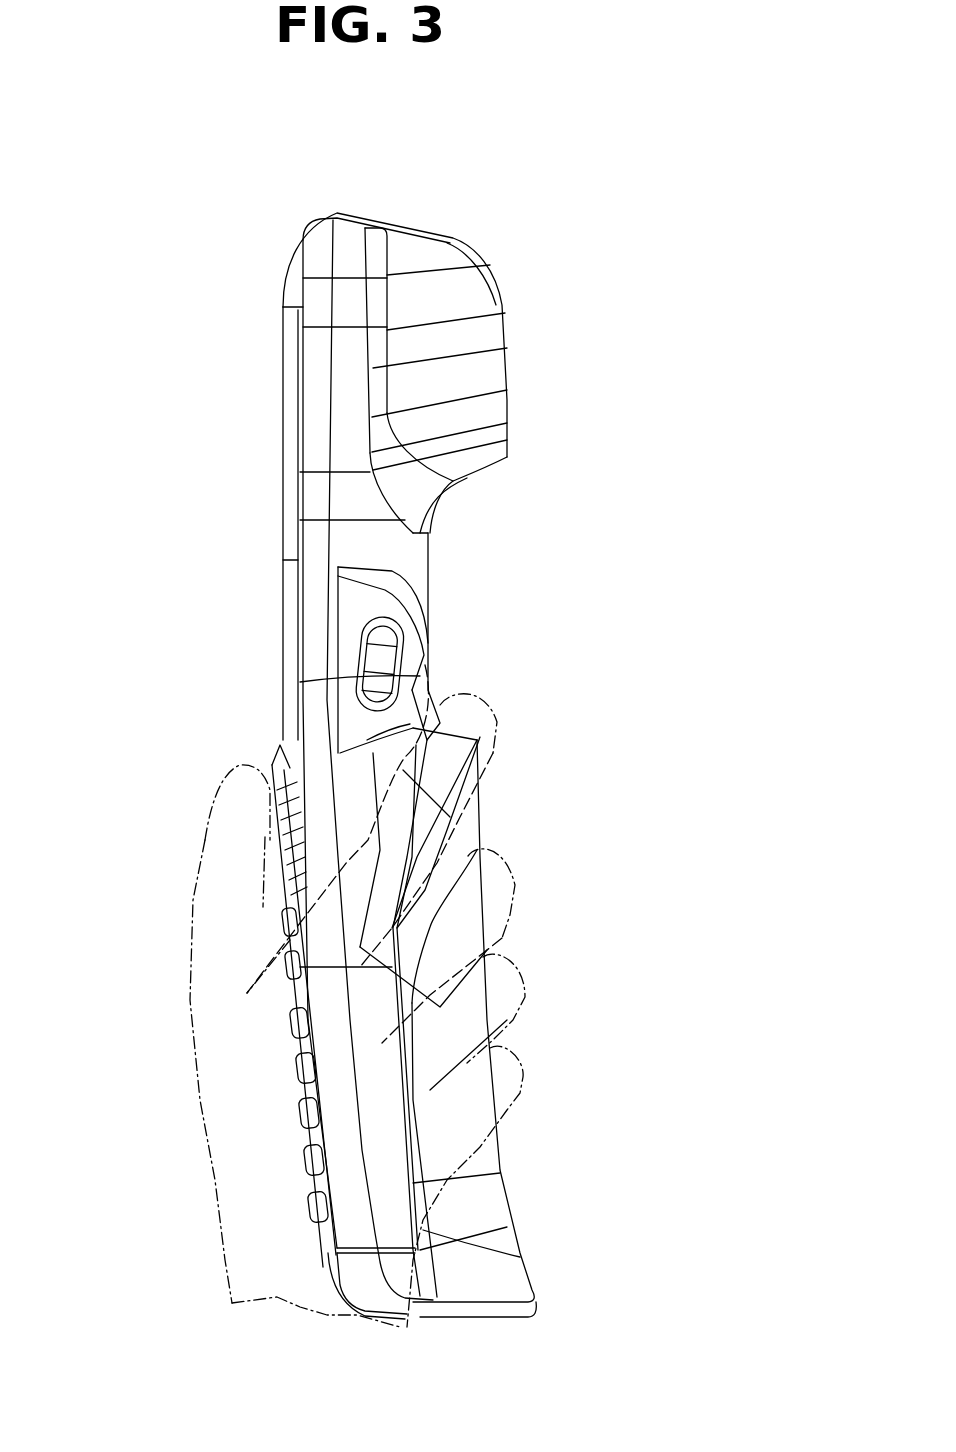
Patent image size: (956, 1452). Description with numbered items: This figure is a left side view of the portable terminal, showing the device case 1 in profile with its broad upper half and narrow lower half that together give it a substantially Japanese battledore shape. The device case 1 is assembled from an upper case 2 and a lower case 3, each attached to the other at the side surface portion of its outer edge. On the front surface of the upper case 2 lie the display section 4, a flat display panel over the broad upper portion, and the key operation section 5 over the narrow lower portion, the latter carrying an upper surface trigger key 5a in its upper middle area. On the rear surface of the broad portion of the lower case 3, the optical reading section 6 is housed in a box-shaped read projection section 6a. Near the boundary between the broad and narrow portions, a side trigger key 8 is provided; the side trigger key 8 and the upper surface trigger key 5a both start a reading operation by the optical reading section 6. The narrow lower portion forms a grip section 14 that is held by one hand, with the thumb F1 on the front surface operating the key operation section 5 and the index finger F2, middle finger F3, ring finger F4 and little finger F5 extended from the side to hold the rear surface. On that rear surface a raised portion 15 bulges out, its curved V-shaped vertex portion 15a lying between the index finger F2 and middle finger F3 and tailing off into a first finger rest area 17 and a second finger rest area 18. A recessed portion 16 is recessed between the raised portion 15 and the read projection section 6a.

The device case 1 is at (326, 194).
The upper case 2 is at (295, 285).
The lower case 3 is at (353, 243).
The display section 4 is at (268, 538).
The key operation section 5 is at (281, 1071).
The upper surface trigger key 5a is at (267, 803).
The optical reading section 6 is at (511, 298).
The read projection section 6a is at (500, 367).
The side trigger keys 8 is at (384, 639).
The grip section 14 is at (336, 1113).
The raised portion 15 is at (502, 752).
The vertex portion 15a is at (460, 785).
The recessed portion 16 is at (437, 637).
The first finger rest area 17 is at (428, 739).
The second finger rest area 18 is at (487, 895).
The thumb F1 is at (203, 860).
The index finger F2 is at (483, 705).
The middle finger F3 is at (507, 860).
The ring finger F4 is at (513, 980).
The little finger F5 is at (507, 1083).